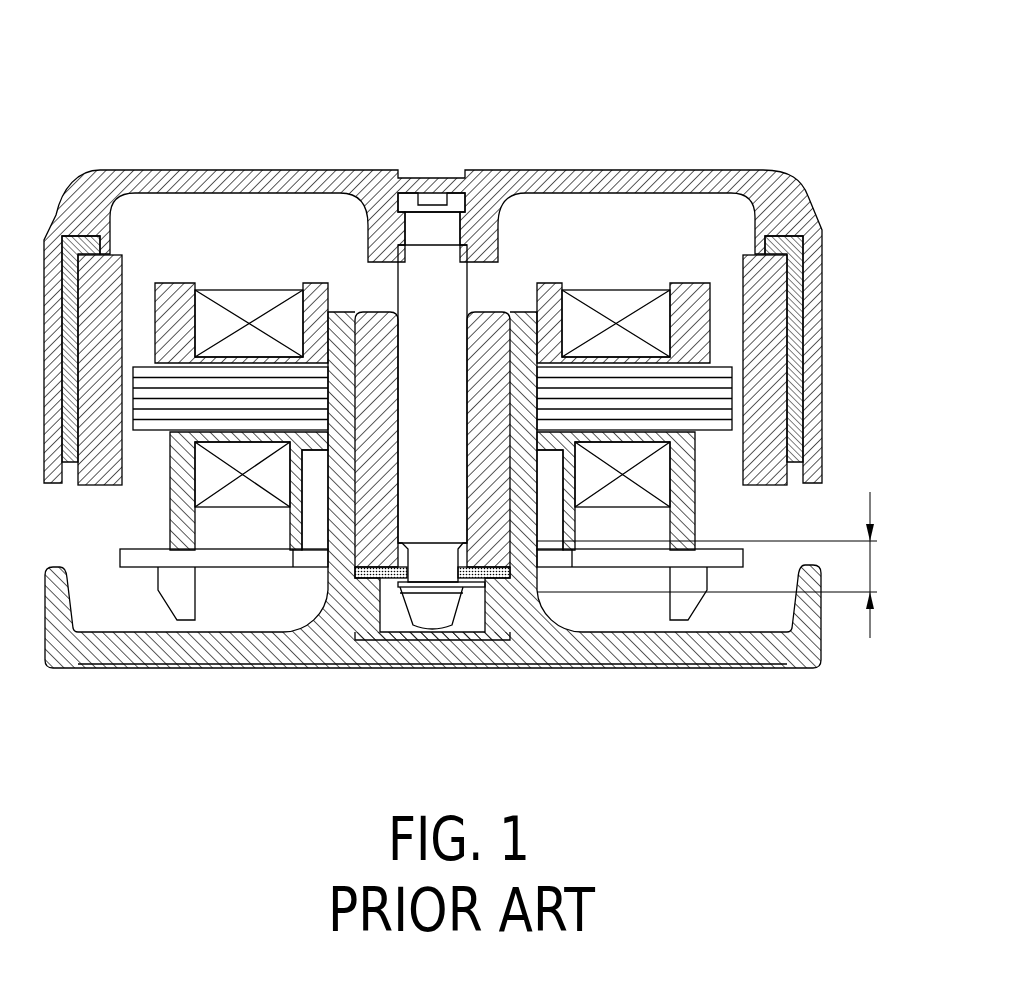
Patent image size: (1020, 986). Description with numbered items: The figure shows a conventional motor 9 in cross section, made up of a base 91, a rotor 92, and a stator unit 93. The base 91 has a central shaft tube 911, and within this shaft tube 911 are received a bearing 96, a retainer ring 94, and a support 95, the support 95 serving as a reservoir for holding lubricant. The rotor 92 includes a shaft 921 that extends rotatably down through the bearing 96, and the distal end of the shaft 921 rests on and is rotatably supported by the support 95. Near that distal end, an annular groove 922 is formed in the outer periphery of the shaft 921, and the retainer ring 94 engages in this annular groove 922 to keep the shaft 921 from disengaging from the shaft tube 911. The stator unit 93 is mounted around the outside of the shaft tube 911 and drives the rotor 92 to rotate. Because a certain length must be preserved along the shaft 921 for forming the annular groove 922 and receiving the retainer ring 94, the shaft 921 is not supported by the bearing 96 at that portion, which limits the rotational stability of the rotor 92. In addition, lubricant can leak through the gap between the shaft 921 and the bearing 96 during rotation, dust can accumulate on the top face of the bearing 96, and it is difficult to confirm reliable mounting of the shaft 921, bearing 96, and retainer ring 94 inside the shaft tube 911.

The conventional motor 9 is at (538, 127).
The base 91 is at (684, 645).
The shaft tube 911 is at (343, 323).
The rotor 92 is at (673, 170).
The shaft 921 is at (435, 280).
The annular groove 922 is at (430, 572).
The stator unit 93 is at (614, 297).
The retainer ring 94 is at (368, 582).
The support 95 is at (498, 628).
The bearing 96 is at (367, 327).